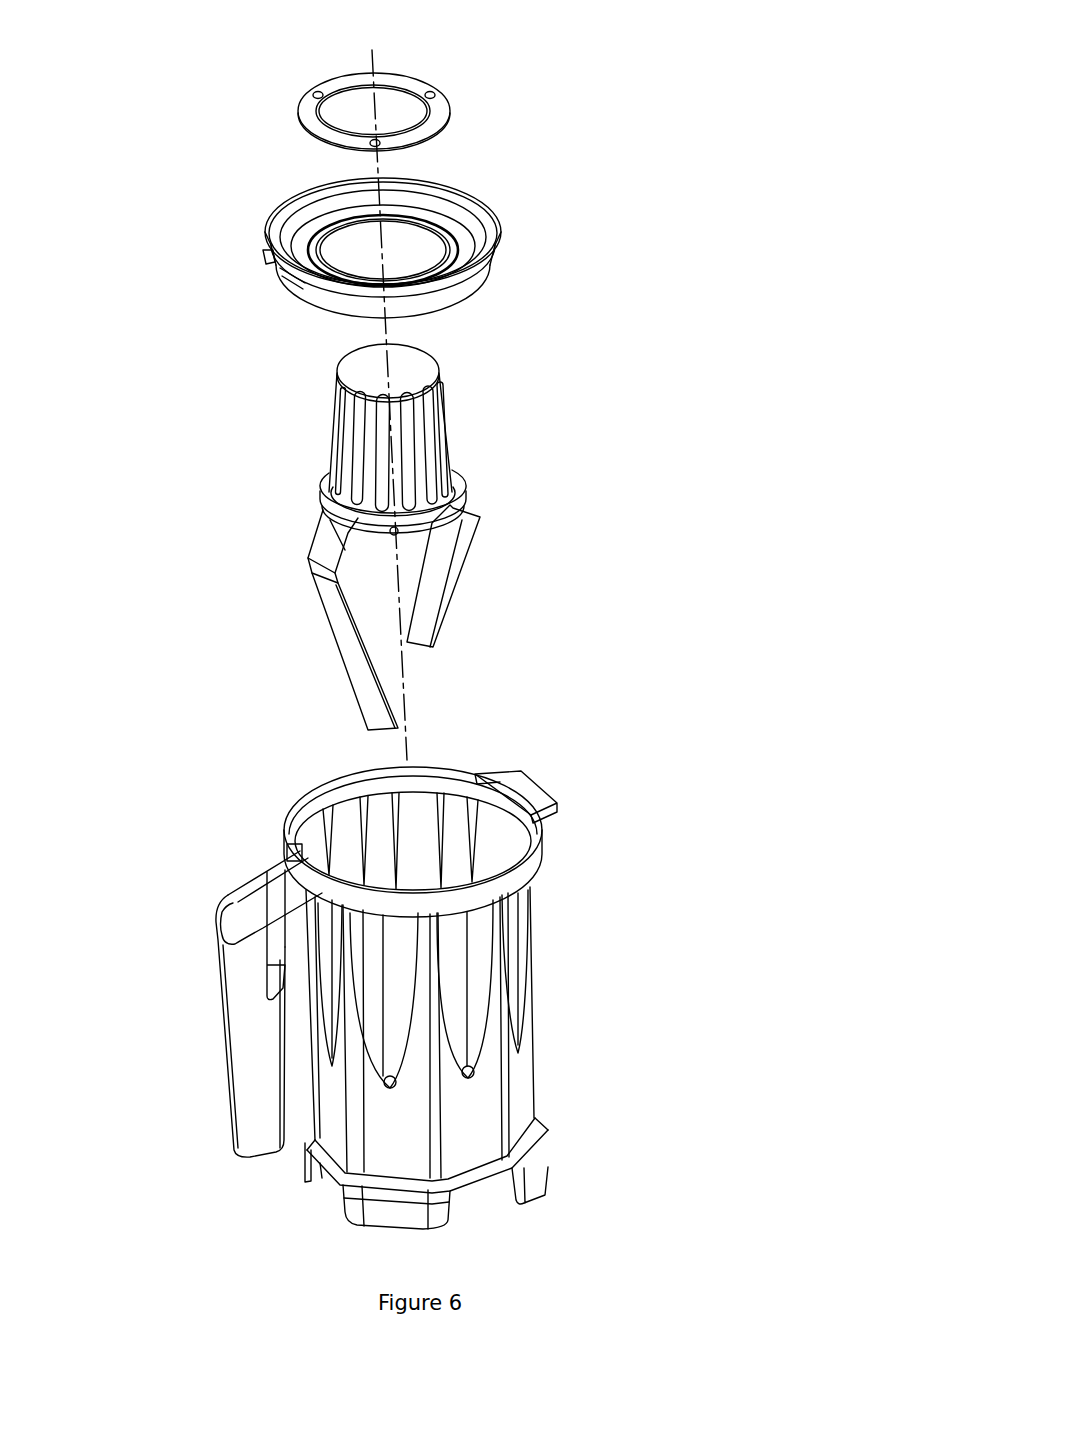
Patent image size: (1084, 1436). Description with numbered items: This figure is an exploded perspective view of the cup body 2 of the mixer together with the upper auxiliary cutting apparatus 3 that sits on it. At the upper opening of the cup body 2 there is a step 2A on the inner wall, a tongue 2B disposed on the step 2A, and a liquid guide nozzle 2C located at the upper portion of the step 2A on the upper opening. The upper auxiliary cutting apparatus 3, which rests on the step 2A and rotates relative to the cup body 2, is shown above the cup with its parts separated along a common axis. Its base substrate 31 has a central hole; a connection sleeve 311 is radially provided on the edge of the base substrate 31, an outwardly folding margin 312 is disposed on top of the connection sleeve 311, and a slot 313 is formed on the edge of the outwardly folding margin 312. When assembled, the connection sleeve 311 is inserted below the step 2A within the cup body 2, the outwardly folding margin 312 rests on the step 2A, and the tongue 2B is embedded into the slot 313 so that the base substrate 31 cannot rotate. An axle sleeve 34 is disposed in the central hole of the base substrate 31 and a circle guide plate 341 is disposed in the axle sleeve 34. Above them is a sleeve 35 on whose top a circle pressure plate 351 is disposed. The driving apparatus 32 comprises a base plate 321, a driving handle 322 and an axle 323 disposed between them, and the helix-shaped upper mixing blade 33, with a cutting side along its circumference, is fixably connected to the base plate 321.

The cup body 2 is at (548, 1013).
The step 2A is at (325, 812).
The tongue 2B is at (287, 855).
The liquid guide nozzle 2C is at (525, 803).
The upper auxiliary cutting apparatus 3 is at (515, 357).
The base substrate 31 is at (513, 225).
The connection sleeve 311 is at (343, 200).
The outwardly folding margin 312 is at (273, 228).
The slot 313 is at (272, 262).
The driving apparatus 32 is at (340, 440).
The base plate 321 is at (457, 483).
The driving handle 322 is at (338, 387).
The axle 323 is at (337, 497).
The upper mixing blade 33 is at (453, 600).
The axle sleeve 34 is at (327, 233).
The circle guide plate 341 is at (420, 222).
The sleeve 35 is at (355, 90).
The circle pressure plate 351 is at (425, 80).